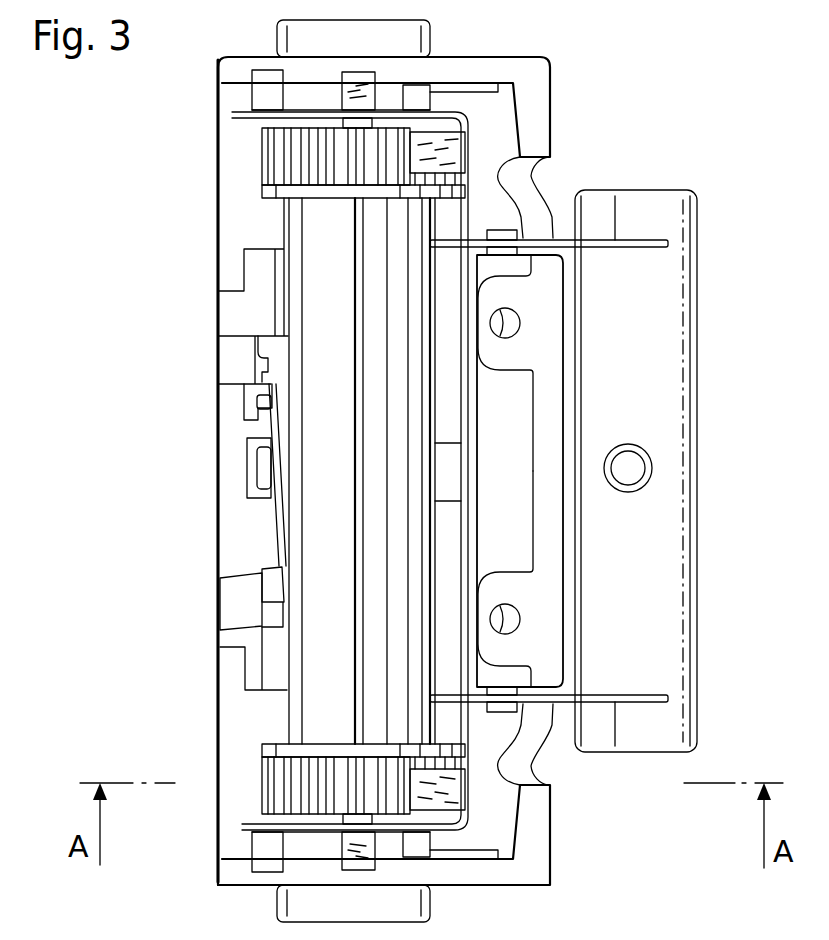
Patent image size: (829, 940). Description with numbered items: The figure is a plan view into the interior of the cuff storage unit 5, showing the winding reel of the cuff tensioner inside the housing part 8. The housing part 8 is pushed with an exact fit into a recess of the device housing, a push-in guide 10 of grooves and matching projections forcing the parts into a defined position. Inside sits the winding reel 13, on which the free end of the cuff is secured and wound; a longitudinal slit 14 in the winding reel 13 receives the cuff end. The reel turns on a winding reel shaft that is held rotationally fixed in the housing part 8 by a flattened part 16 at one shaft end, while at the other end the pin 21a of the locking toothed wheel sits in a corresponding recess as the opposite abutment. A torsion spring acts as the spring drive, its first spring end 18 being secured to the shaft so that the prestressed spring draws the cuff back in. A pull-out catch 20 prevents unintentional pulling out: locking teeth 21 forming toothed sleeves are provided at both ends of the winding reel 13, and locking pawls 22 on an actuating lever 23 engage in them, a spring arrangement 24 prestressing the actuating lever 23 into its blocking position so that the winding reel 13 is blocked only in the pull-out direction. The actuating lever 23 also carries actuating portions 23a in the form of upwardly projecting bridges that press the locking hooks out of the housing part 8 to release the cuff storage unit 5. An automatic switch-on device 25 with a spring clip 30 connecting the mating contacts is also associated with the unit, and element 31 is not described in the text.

The cuff storage unit 5 is at (241, 45).
The housing part 8 is at (493, 825).
The push-in guide 10 is at (440, 30).
The winding reel 13 is at (320, 617).
The longitudinal slit 14 is at (360, 527).
The flattened part 16 is at (365, 84).
The first spring end 18 is at (360, 686).
The pull-out catch 20 is at (474, 110).
The locking teeth 21 is at (282, 146).
The pin 21a is at (352, 846).
The locking pawls 22 is at (443, 143).
The actuating lever 23 is at (663, 573).
The actuating portions 23a is at (463, 240).
The spring arrangement 24 is at (654, 467).
The automatic switch-on device 25 is at (272, 399).
The spring clip 30 is at (270, 473).
The guide sleeve 31 is at (306, 272).